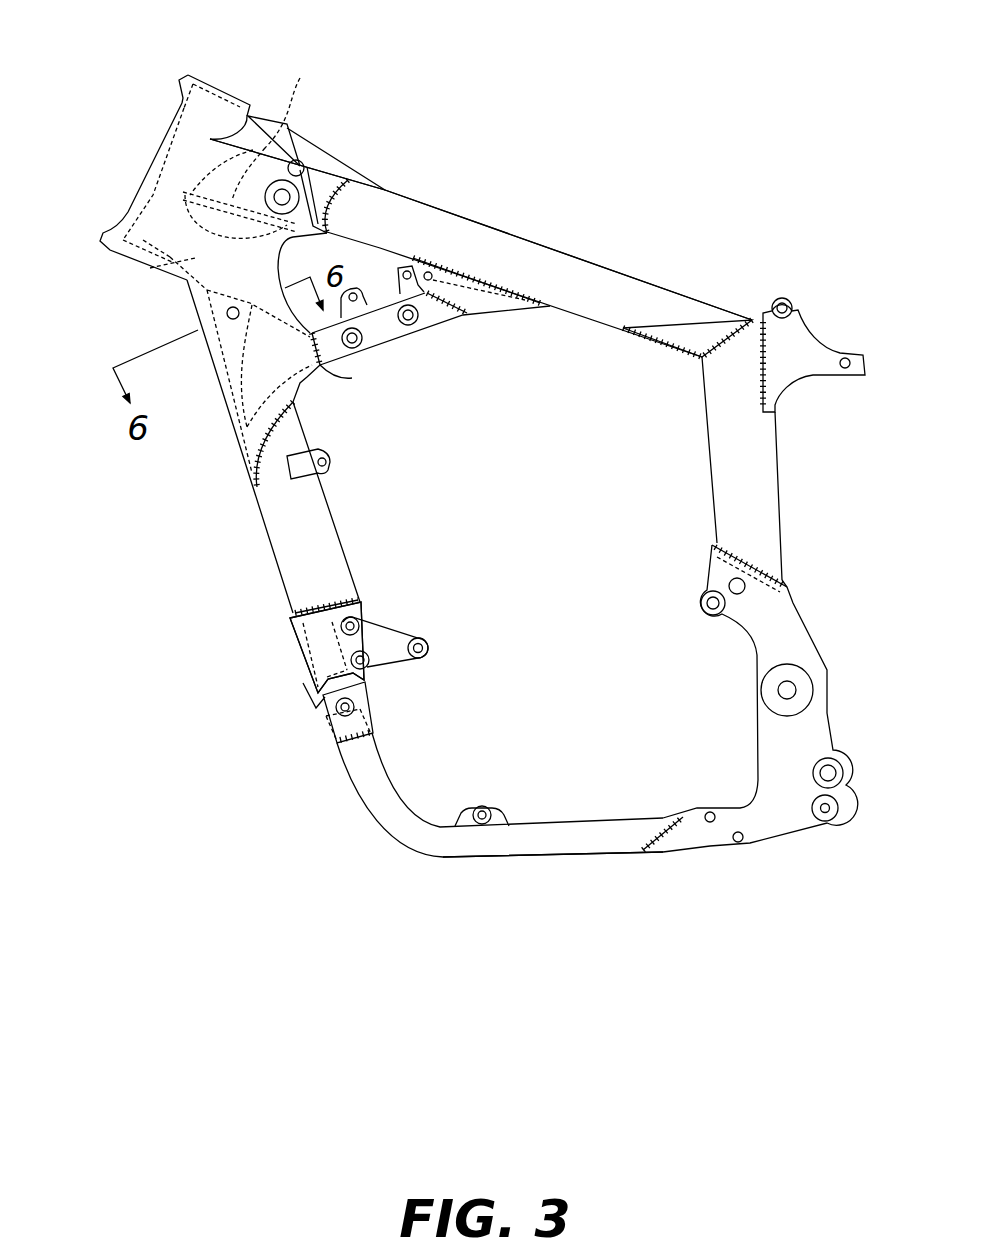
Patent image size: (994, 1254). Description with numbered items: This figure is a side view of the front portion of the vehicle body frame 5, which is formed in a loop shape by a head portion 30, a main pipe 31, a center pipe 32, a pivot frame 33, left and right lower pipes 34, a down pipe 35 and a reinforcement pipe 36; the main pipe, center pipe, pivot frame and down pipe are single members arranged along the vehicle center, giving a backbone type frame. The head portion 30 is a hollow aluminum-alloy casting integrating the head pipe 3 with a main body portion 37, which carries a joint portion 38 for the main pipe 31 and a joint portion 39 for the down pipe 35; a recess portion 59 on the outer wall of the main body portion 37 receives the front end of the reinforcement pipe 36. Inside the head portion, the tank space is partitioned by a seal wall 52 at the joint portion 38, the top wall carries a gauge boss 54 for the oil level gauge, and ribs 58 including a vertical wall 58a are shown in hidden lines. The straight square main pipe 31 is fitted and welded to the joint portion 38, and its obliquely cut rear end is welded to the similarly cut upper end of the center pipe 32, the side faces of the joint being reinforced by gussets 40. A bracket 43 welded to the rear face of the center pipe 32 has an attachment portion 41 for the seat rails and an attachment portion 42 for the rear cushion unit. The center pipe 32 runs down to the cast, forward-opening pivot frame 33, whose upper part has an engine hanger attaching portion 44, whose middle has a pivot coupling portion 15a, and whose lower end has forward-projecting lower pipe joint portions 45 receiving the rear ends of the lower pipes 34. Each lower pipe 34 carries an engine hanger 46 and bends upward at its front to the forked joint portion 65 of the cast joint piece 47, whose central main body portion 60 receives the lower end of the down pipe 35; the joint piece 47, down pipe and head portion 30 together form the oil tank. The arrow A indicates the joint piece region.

The head pipe 3 is at (170, 140).
The head portion 30 is at (178, 202).
The gauge boss 54 is at (287, 124).
The ribs 58 is at (264, 260).
The vertical wall 58a is at (180, 262).
The seal wall 52 is at (302, 164).
The joint portion 38 is at (336, 184).
The main pipe 31 is at (459, 218).
The vehicle body frame 5 is at (574, 220).
The gussets 40 is at (688, 325).
The attachment portion 41 is at (781, 298).
The attachment portion 42 is at (846, 358).
The bracket 43 is at (797, 371).
The center pipe 32 is at (773, 497).
The main body portion 37 is at (207, 272).
The reinforcement pipe 36 is at (387, 333).
The recess portion 59 is at (323, 356).
The joint portion 39 is at (247, 453).
The down pipe 35 is at (282, 543).
The main body portion 60 is at (313, 640).
The joint piece 47 is at (297, 667).
The bracket region A is at (192, 760).
The forked joint portion 65 is at (327, 697).
The lower pipes 34 is at (582, 827).
The engine hanger 46 is at (479, 803).
The pivot frame 33 is at (757, 635).
The engine hanger attaching portion 44 is at (706, 603).
The pivot coupling portion 15a is at (782, 688).
The lower pipe joint portions 45 is at (718, 845).